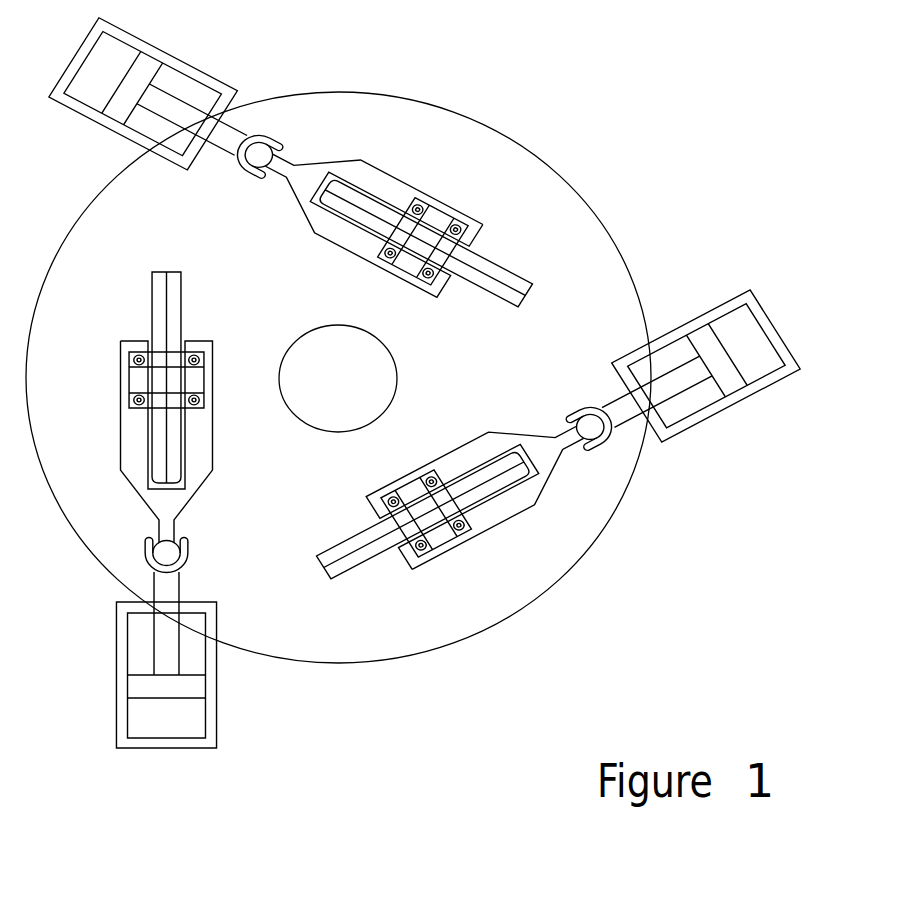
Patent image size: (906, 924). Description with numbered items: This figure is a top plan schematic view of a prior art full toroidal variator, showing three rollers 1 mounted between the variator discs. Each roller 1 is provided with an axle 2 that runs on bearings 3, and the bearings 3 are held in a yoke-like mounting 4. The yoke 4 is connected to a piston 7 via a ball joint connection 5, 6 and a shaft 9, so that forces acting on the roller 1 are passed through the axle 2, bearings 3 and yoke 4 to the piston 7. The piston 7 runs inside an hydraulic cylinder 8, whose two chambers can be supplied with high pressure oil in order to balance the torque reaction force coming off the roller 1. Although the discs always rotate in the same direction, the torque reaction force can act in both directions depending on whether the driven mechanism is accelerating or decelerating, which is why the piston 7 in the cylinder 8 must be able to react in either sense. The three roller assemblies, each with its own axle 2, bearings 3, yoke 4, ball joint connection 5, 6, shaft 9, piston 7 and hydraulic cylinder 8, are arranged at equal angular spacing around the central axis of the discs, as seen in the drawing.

The roller 1 is at (150, 295).
The axle 2 is at (128, 378).
The bearings 3 is at (139, 405).
The yoke-like mounting 4 is at (212, 405).
The ball joint connection 5 is at (610, 442).
The ball joint connection 6 is at (578, 404).
The piston 7 is at (767, 390).
The hydraulic cylinder 8 is at (707, 350).
The shaft 9 is at (683, 400).